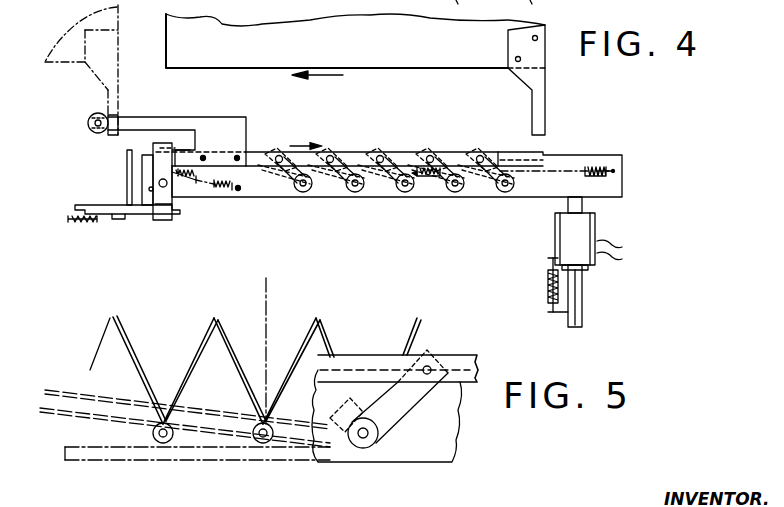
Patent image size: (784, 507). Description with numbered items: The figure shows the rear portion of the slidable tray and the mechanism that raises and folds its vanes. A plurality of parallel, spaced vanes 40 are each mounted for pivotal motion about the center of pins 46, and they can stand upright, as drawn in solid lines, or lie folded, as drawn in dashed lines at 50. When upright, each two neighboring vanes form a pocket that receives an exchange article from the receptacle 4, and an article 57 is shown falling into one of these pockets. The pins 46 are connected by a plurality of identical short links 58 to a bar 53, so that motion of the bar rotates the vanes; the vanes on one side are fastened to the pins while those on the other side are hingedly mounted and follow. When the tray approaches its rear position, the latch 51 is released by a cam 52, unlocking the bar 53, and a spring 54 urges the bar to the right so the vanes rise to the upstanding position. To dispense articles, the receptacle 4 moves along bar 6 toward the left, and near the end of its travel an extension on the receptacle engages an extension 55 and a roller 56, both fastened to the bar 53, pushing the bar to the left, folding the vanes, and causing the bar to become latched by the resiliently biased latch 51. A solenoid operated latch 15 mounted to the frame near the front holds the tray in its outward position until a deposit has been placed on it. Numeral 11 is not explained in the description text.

In FIG. 4, the receptacle 4 is at (106, 53).
In FIG. 4, the bar 6 is at (458, 5).
In FIG. 4, the support 11 is at (534, 5).
In FIG. 4, the solenoid operated latch 15 is at (597, 226).
In FIG. 5, the vanes 40 is at (330, 337).
In FIG. 4, the pins 46 is at (303, 192).
In FIG. 5, the pins 46 is at (164, 445).
In FIG. 5, the folded position of vanes 50 is at (64, 393).
In FIG. 4, the latch 51 is at (168, 222).
In FIG. 4, the cam 52 is at (140, 210).
In FIG. 4, the bar 53 is at (353, 150).
In FIG. 5, the bar 53 is at (458, 355).
In FIG. 4, the spring 54 is at (598, 165).
In FIG. 4, the extension 55 is at (232, 118).
In FIG. 4, the roller 56 is at (97, 131).
In FIG. 5, the article 57 is at (270, 298).
In FIG. 4, the short links 58 is at (430, 153).
In FIG. 5, the short links 58 is at (405, 408).